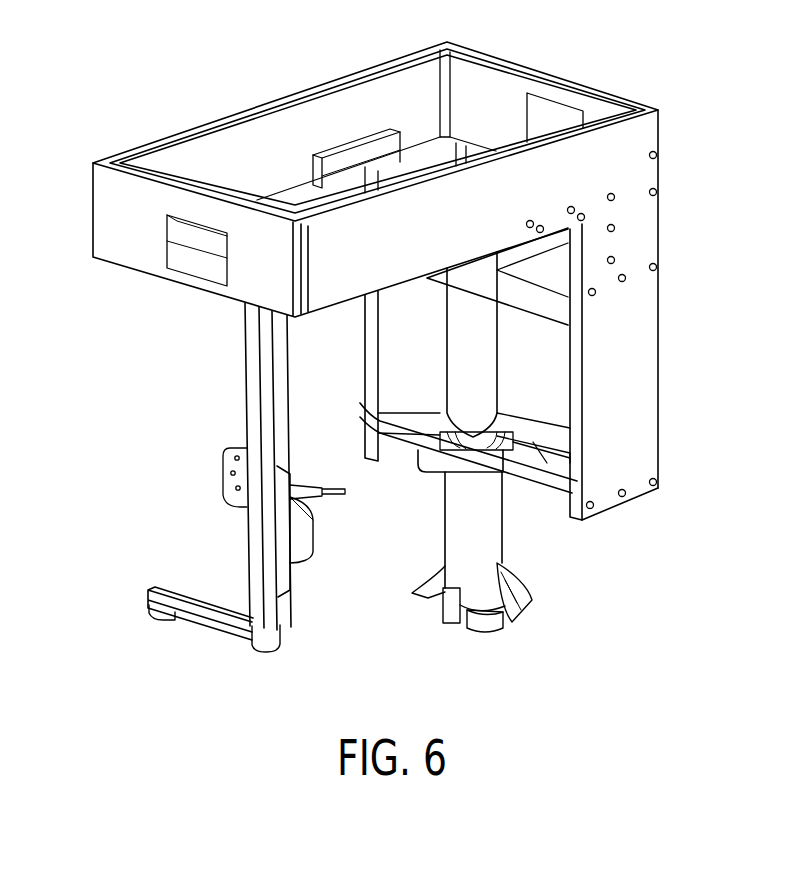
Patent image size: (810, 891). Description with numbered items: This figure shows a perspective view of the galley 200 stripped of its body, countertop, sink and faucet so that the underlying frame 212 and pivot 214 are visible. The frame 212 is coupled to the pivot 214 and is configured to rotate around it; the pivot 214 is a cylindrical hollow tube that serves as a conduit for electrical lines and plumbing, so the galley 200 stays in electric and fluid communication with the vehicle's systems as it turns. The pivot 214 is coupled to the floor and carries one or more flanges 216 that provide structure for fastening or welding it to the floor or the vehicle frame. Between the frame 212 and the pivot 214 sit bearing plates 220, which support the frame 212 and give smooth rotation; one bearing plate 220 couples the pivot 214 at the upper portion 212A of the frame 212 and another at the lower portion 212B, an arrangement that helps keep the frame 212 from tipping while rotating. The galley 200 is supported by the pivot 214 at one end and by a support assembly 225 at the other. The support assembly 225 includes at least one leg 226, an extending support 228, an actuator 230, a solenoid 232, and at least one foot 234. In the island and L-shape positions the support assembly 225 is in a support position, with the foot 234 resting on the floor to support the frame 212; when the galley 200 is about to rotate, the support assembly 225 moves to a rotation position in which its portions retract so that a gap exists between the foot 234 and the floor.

The galley 200 is at (102, 54).
The frame 212 is at (641, 424).
The upper portion of the frame 212A is at (548, 311).
The lower portion of the frame 212B is at (558, 474).
The pivot 214 is at (490, 543).
The flanges 216 is at (523, 597).
The bearing plates 220 is at (513, 436).
The support assembly 225 is at (120, 598).
The leg 226 is at (253, 371).
The extending support 228 is at (197, 598).
The actuator 230 is at (278, 592).
The solenoid 232 is at (300, 537).
The foot 234 is at (163, 611).